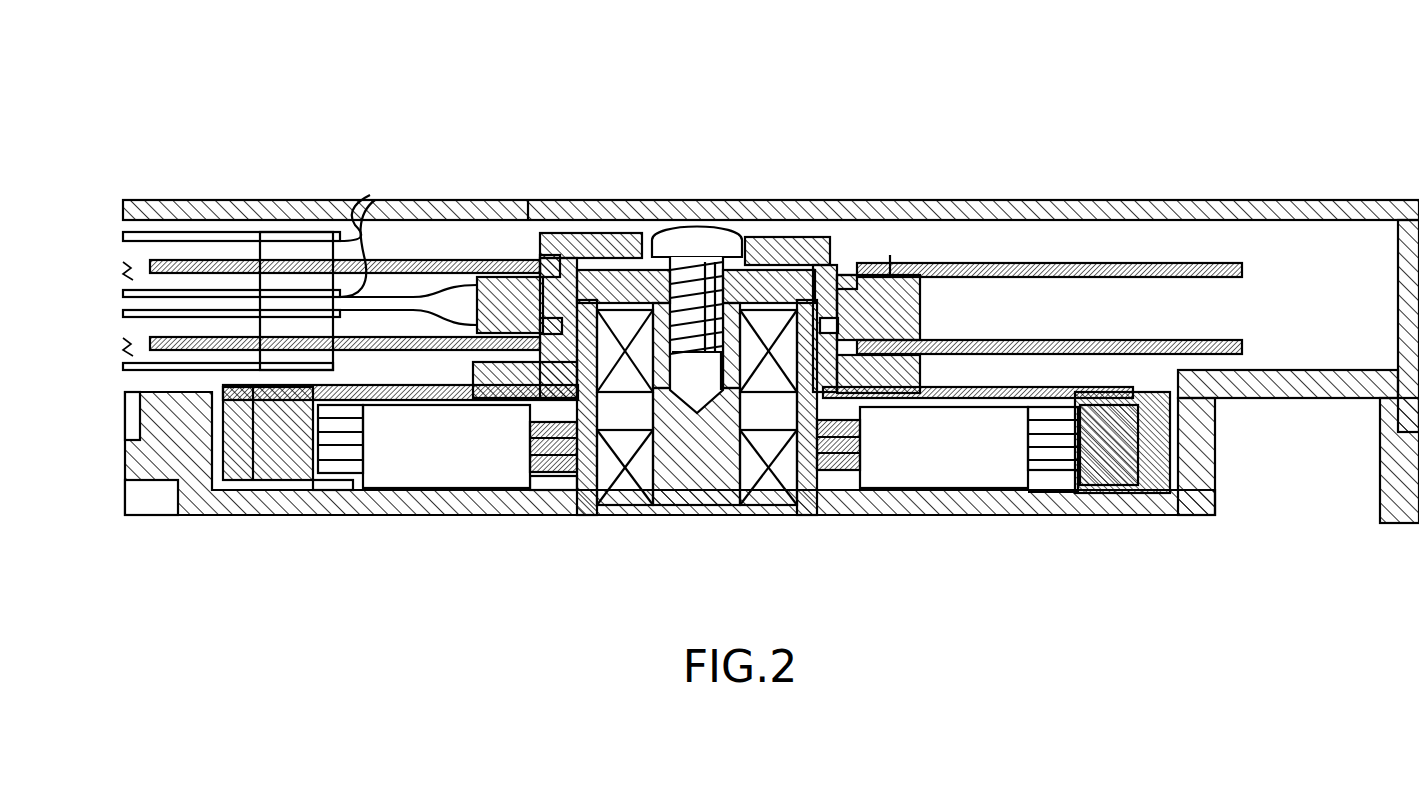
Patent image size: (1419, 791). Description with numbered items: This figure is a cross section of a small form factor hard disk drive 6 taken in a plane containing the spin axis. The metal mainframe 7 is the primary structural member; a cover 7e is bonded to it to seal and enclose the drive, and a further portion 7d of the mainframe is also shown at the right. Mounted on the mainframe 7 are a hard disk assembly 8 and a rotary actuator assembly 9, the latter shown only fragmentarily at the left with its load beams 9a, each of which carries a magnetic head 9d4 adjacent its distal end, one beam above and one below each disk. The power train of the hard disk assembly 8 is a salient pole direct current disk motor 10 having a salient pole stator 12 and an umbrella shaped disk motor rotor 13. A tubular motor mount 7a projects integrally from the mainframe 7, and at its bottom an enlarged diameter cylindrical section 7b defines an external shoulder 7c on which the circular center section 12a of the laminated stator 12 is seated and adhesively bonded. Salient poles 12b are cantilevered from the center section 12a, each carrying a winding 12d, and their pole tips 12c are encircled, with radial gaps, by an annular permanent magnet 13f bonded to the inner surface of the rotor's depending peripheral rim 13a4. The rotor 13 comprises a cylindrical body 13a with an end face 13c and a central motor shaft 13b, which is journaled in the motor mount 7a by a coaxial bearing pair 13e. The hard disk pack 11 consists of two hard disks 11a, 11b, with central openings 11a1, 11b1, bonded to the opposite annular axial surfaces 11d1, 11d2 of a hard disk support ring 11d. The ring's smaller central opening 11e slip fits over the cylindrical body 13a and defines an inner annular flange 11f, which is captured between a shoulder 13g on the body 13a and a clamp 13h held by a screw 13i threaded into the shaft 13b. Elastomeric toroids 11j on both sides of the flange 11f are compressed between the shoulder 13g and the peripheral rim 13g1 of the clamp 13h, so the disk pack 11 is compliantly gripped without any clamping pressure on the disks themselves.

The disk drive 6 is at (968, 200).
The mainframe 7 is at (900, 495).
The tubular motor mount 7a is at (808, 492).
The enlarged diameter cylindrical section 7b is at (587, 505).
The external shoulder 7c is at (565, 495).
The housing side wall 7d is at (1125, 490).
The cover 7e is at (1265, 200).
The hard disk assembly 8 is at (1160, 280).
The rotary actuator assembly 9 is at (232, 235).
The load beam 9a is at (413, 298).
The magnetic head 9d4 is at (375, 195).
The disk motor 10 is at (1090, 383).
The hard disk pack 11 is at (1094, 320).
The hard disk 11a is at (145, 266).
The central circular opening 11a1 is at (540, 262).
The hard disk 11b is at (145, 343).
The central circular opening 11b1 is at (495, 388).
The hard disk support ring 11d is at (920, 305).
The annular axial surface 11d1 is at (930, 270).
The annular axial surface 11d2 is at (920, 333).
The central circular opening 11e is at (540, 327).
The inner annular flange 11f is at (893, 249).
The elastomeric toroids 11j is at (855, 275).
The salient pole stator 12 is at (975, 465).
The circular center section 12a is at (850, 485).
The salient pole 12b is at (1035, 485).
The pole tip 12c is at (1065, 485).
The winding 12d is at (455, 475).
The disk motor rotor 13 is at (1005, 385).
The cylindrical body 13a is at (822, 285).
The depending peripheral rim 13a4 is at (1160, 478).
The motor shaft 13b is at (700, 478).
The end face 13c is at (765, 255).
The coaxial bearing pair 13e is at (625, 478).
The annular permanent magnet 13f is at (285, 485).
The shoulder 13g is at (895, 357).
The peripheral rim 13g1 is at (840, 310).
The clamp 13h is at (605, 245).
The screw 13i is at (692, 243).